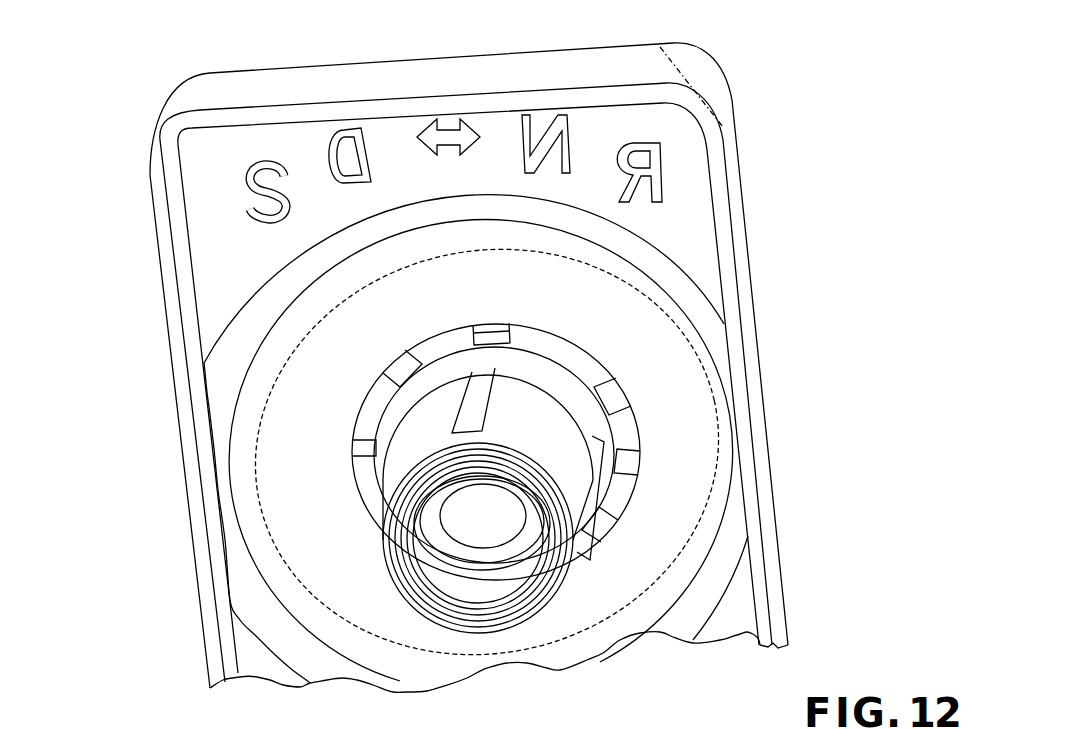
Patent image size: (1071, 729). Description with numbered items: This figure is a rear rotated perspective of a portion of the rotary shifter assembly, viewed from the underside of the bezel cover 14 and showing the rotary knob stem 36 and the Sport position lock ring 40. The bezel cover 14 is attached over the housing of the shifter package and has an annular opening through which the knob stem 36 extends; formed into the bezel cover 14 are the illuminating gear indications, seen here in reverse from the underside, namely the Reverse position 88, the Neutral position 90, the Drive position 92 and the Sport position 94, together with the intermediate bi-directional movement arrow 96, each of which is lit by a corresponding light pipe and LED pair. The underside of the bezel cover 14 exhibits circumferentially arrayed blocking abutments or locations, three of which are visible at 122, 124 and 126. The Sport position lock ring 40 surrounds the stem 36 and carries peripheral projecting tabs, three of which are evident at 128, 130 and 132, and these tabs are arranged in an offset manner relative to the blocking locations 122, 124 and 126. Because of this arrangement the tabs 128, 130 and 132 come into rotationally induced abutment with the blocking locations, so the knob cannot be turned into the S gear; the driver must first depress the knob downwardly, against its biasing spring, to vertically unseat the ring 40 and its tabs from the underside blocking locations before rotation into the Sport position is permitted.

The bezel cover 14 is at (157, 243).
The rotary knob stem 36 is at (420, 423).
The Sport position lock ring 40 is at (575, 345).
The Reverse shifter position 88 is at (658, 182).
The Neutral shifter position 90 is at (550, 120).
The Drive shifter position 92 is at (340, 127).
The Sport shifter position 94 is at (252, 167).
The bi-directional movement arrow 96 is at (442, 133).
The blocking abutment 122 is at (420, 342).
The blocking abutment 124 is at (574, 399).
The blocking abutment 126 is at (594, 528).
The peripheral projecting tab 128 is at (360, 472).
The peripheral projecting tab 130 is at (478, 342).
The peripheral projecting tab 132 is at (627, 450).